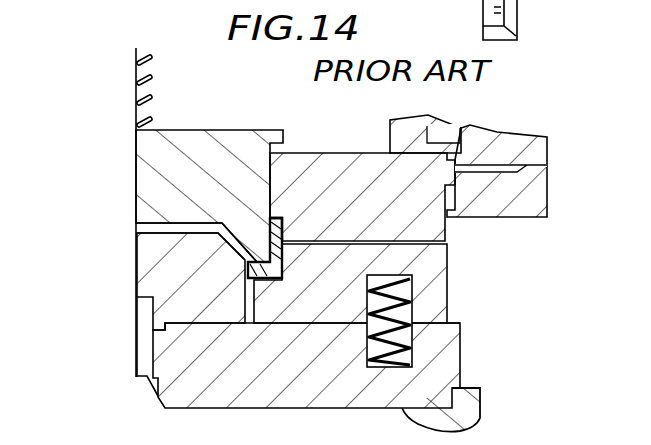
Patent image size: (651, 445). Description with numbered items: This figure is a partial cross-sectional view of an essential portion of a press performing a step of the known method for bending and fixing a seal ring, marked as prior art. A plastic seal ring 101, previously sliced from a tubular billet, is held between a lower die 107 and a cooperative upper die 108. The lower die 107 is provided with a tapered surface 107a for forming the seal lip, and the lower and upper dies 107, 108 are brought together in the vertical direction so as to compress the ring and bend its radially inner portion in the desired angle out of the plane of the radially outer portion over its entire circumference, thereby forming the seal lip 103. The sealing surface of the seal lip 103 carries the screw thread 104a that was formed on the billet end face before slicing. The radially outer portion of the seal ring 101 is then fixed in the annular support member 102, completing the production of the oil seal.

The seal ring 101 is at (283, 282).
The annular support member 102 is at (286, 224).
The seal lip 103 is at (250, 238).
The screw thread 104a is at (244, 265).
The lower die 107 is at (136, 273).
The tapered surface 107a is at (242, 238).
The upper die 108 is at (246, 262).